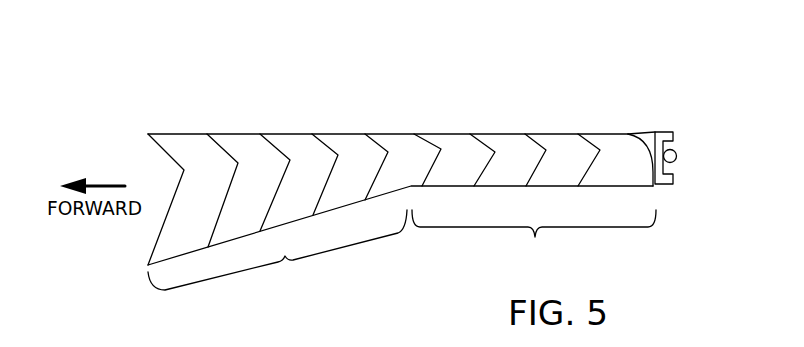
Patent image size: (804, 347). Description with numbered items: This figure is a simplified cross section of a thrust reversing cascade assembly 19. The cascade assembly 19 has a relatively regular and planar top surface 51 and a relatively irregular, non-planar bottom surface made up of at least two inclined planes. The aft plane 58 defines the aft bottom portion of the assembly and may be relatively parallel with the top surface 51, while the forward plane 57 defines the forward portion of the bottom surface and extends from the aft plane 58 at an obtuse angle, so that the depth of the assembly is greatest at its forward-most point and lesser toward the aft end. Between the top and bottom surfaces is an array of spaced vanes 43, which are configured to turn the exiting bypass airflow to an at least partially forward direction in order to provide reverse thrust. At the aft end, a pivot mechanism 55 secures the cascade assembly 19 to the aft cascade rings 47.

The cascade assembly 19 is at (635, 54).
The spaced vanes 43 is at (282, 137).
The top surface 51 is at (394, 125).
The aft cascade rings 47 is at (663, 122).
The pivot mechanism 55 is at (678, 138).
The forward plane 57 is at (277, 253).
The aft plane 58 is at (534, 238).